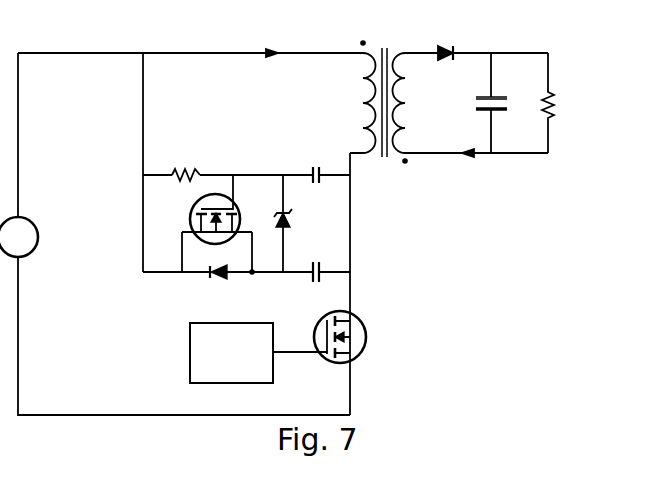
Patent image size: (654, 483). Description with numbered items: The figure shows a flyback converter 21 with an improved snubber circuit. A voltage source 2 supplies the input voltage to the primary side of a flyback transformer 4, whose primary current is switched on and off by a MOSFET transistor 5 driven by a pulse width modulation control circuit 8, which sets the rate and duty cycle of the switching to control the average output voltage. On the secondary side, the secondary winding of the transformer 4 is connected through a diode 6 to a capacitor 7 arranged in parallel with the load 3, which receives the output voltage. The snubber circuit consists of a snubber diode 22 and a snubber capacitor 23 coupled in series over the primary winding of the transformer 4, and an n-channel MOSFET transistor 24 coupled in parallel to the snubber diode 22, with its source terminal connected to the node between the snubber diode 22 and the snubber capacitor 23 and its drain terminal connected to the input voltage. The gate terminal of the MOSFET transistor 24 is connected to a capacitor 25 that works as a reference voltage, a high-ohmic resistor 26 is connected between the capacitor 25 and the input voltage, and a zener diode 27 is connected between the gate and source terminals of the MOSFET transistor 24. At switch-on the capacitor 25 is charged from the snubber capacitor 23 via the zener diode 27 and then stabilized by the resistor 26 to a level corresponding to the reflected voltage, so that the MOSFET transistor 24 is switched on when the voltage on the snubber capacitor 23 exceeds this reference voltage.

The voltage source 2 is at (36, 223).
The load 3 is at (545, 118).
The flyback transformer 4 is at (360, 82).
The MOSFET transistor 5 is at (358, 358).
The diode 6 is at (441, 62).
The capacitor 7 is at (500, 97).
The pulse width modulation control circuit 8 is at (188, 371).
The flyback converter 21 is at (497, 293).
The snubber diode 22 is at (218, 280).
The snubber capacitor 23 is at (310, 284).
The n-channel MOSFET transistor 24 is at (193, 206).
The capacitor 25 is at (310, 167).
The resistor 26 is at (180, 167).
The zener diode 27 is at (290, 224).